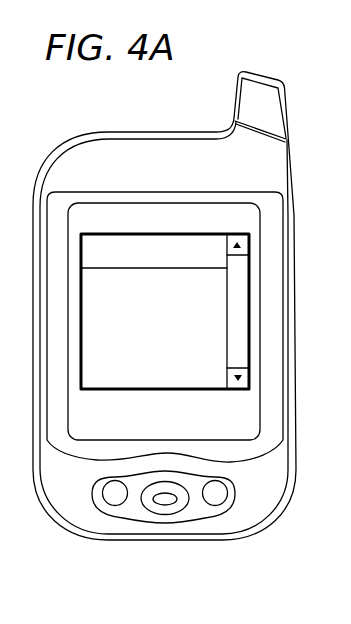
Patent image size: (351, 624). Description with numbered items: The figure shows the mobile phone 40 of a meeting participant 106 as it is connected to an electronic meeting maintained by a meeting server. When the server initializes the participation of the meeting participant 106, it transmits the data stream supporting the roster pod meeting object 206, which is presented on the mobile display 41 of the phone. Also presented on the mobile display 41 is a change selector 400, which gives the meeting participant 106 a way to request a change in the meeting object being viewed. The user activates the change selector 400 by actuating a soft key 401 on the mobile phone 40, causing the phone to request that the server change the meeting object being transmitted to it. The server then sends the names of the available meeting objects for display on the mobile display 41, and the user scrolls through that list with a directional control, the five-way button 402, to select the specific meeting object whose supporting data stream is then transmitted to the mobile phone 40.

The meeting participant 106 is at (221, 56).
The mobile phone 40 is at (120, 132).
The mobile display 41 is at (163, 192).
The roster pod meeting object 206 is at (213, 337).
The change selector 400 is at (157, 428).
The soft key 401 is at (112, 496).
The 5-way button 402 is at (163, 507).